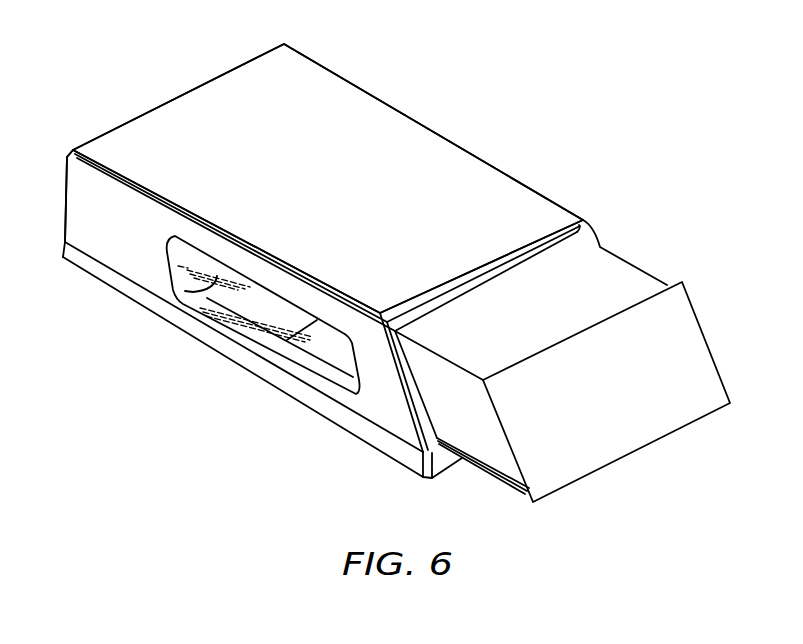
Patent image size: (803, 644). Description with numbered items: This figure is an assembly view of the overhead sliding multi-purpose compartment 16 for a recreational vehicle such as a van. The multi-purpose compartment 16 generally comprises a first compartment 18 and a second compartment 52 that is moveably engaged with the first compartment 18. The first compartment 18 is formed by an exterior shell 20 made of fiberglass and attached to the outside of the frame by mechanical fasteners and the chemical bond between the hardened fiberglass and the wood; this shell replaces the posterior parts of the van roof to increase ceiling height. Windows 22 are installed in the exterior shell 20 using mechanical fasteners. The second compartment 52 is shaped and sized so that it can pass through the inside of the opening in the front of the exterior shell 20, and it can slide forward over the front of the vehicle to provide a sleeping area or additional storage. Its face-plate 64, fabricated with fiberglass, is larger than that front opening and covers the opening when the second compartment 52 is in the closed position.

The multi-purpose compartment 16 is at (503, 172).
The first compartment 18 is at (66, 175).
The exterior shell 20 is at (365, 91).
The windows 22 is at (188, 296).
The second compartment 52 is at (617, 257).
The face-plate 64 is at (718, 368).